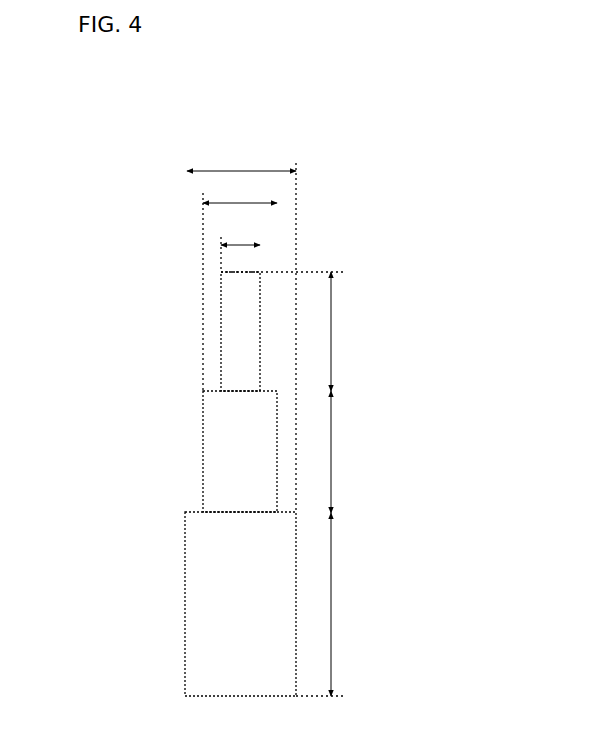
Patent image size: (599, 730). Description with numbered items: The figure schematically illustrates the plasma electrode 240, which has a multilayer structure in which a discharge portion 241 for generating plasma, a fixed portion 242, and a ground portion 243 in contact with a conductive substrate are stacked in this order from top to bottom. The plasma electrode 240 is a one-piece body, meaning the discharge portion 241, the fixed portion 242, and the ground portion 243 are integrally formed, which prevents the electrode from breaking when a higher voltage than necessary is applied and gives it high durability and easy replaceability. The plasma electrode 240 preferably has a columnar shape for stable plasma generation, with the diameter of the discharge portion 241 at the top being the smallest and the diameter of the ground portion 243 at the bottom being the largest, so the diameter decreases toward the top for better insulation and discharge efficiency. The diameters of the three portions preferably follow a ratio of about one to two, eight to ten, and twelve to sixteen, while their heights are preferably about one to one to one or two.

The plasma electrode 240 is at (258, 110).
The discharge portion 241 is at (230, 323).
The fixed portion 242 is at (212, 457).
The ground portion 243 is at (197, 616).